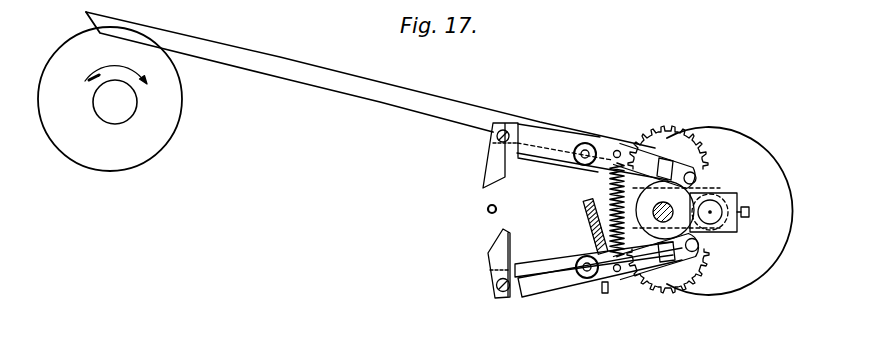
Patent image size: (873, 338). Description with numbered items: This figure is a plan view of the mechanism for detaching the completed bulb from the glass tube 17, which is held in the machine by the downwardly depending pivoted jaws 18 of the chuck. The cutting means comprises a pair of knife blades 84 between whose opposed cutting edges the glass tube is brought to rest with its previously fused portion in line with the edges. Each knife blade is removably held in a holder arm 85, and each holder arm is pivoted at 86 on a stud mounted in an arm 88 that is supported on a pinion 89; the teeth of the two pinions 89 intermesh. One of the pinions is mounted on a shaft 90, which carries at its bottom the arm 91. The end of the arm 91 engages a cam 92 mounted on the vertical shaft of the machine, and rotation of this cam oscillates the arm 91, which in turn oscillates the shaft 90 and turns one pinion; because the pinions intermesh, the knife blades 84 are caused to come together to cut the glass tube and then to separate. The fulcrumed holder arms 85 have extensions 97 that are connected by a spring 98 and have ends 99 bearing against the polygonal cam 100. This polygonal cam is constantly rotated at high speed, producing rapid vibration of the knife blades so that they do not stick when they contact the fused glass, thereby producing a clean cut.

The glass tube 17 is at (498, 209).
The pivoted jaws 18 is at (705, 179).
The knife blades 84 is at (492, 161).
The holder arm 85 is at (551, 158).
The pivot 86 is at (585, 143).
The arm 88 is at (553, 290).
The pinion 89 is at (658, 295).
The shaft 90 is at (706, 247).
The arm 91 is at (391, 104).
The cam 92 is at (168, 135).
The extensions 97 is at (617, 150).
The spring 98 is at (611, 191).
The ends 99 is at (667, 128).
The polygonal cam 100 is at (700, 181).